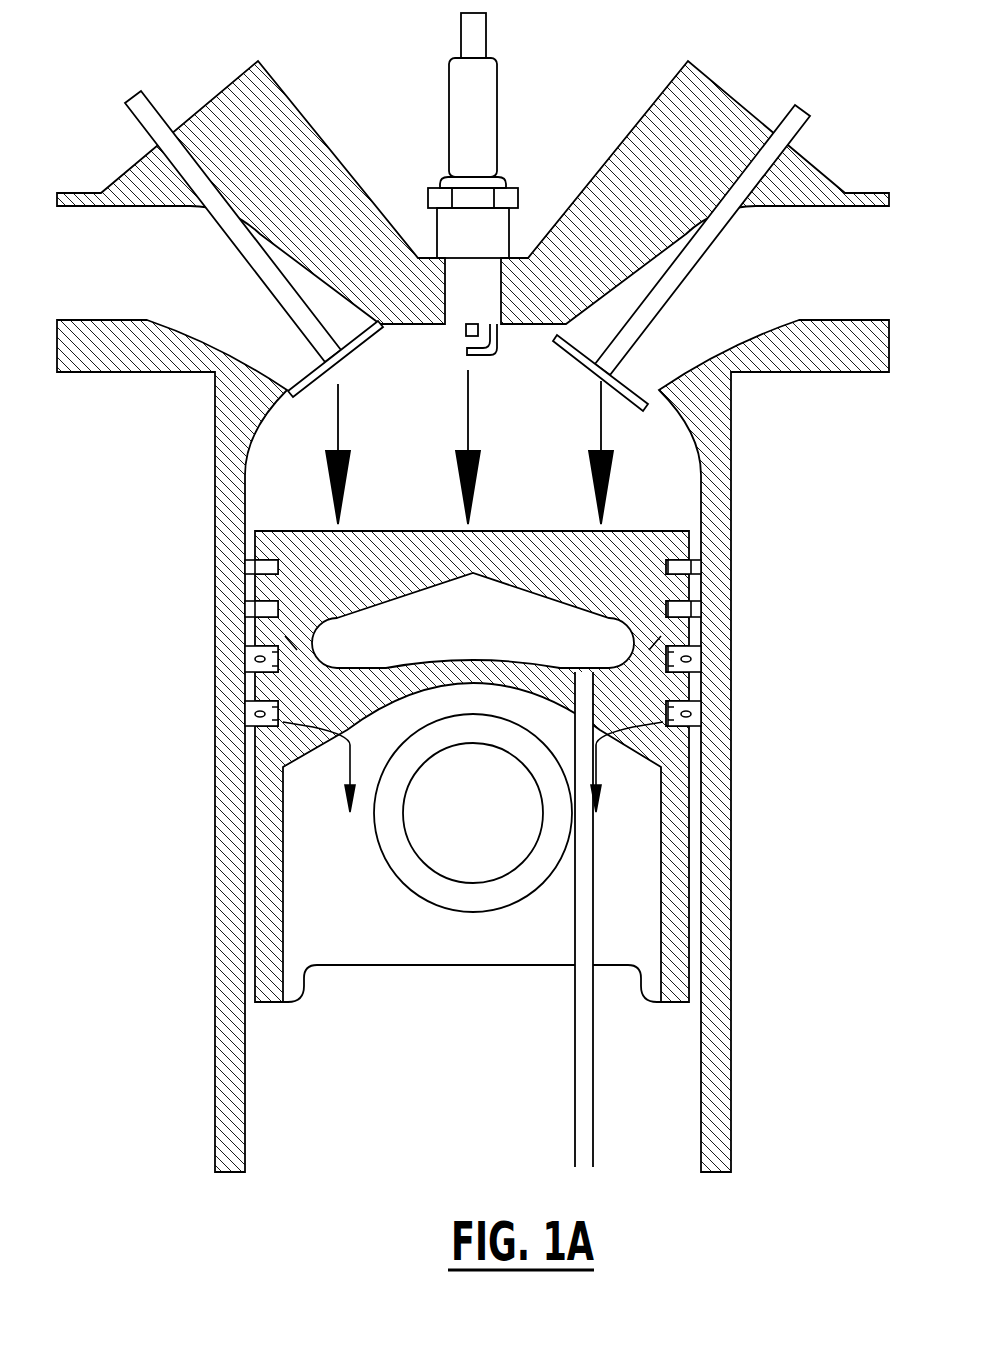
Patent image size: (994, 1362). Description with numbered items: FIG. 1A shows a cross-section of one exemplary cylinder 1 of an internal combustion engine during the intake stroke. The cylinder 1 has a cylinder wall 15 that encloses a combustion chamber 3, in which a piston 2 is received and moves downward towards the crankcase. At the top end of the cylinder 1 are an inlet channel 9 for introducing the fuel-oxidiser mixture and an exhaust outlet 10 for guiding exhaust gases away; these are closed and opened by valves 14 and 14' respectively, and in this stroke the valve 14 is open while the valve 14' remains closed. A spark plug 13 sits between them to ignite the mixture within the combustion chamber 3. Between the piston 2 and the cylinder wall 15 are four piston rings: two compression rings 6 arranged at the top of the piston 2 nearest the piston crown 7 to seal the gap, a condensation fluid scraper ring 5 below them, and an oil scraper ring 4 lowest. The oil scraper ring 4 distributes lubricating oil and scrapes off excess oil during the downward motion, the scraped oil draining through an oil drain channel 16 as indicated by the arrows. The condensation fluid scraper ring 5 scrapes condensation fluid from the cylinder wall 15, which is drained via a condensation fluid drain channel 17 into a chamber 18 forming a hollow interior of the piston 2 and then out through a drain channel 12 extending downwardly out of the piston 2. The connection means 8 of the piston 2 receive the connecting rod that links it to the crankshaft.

The cylinder 1 is at (471, 592).
The piston 2 is at (472, 811).
The combustion chamber 3 is at (440, 402).
The oil scraper ring 4 is at (252, 722).
The condensation fluid scraper ring 5 is at (252, 653).
The compression rings 6 is at (252, 606).
The piston crown 7 is at (653, 536).
The connection means 8 is at (432, 848).
The inlet channel 9 is at (854, 306).
The exhaust outlet 10 is at (86, 310).
The drain channel 12 is at (578, 1106).
The spark plug 13 is at (490, 118).
The valve 14 is at (681, 258).
The valve 14' is at (254, 244).
The cylinder wall 15 is at (238, 1121).
The oil drain channel 16 is at (298, 726).
The condensation fluid drain channel 17 is at (300, 650).
The chamber 18 is at (497, 630).